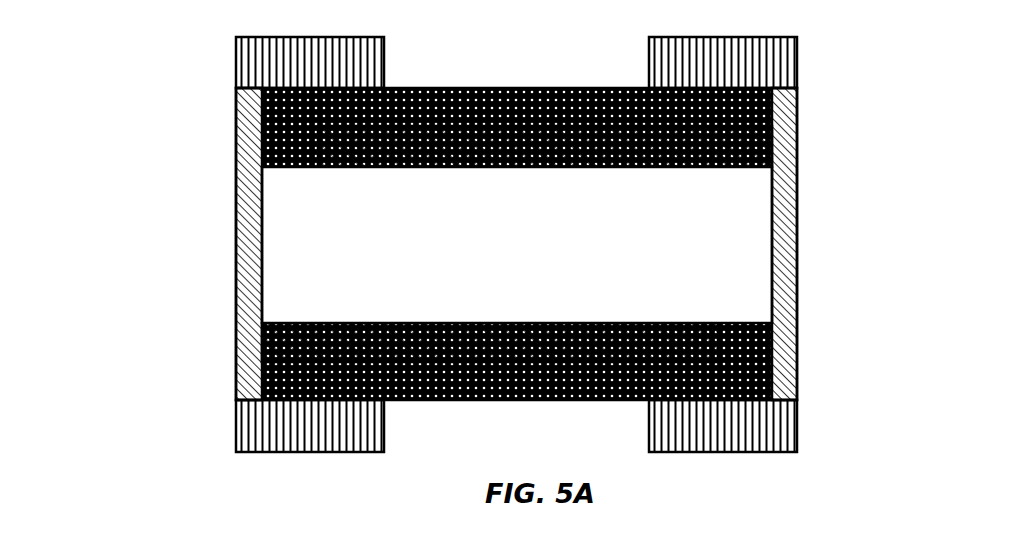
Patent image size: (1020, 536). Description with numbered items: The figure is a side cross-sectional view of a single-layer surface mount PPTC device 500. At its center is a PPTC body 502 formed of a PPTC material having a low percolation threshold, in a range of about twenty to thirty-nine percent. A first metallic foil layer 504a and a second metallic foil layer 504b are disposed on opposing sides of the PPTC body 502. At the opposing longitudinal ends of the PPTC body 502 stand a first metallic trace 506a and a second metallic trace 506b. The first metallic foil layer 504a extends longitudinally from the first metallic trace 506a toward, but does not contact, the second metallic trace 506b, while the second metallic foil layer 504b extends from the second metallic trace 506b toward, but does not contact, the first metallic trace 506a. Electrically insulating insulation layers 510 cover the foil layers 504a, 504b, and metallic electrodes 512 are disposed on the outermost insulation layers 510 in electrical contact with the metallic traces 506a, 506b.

The single-layer surface mount PPTC device 500 is at (133, 116).
The PPTC body 502 is at (725, 213).
The first metallic foil layer 504a is at (277, 342).
The second metallic foil layer 504b is at (752, 143).
The first metallic trace 506a is at (250, 250).
The second metallic trace 506b is at (782, 238).
The insulation layer 510 is at (772, 110).
The metallic electrode 512 is at (250, 72).